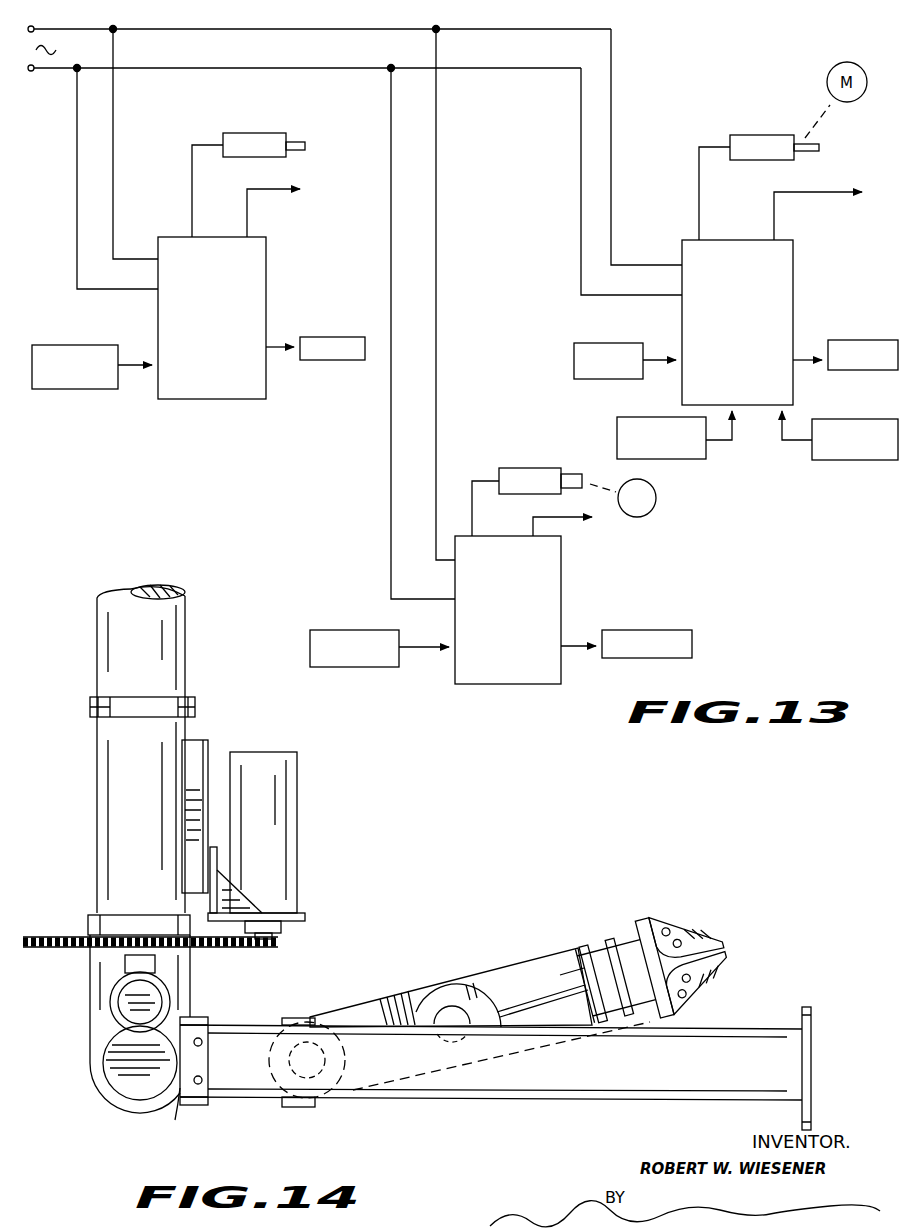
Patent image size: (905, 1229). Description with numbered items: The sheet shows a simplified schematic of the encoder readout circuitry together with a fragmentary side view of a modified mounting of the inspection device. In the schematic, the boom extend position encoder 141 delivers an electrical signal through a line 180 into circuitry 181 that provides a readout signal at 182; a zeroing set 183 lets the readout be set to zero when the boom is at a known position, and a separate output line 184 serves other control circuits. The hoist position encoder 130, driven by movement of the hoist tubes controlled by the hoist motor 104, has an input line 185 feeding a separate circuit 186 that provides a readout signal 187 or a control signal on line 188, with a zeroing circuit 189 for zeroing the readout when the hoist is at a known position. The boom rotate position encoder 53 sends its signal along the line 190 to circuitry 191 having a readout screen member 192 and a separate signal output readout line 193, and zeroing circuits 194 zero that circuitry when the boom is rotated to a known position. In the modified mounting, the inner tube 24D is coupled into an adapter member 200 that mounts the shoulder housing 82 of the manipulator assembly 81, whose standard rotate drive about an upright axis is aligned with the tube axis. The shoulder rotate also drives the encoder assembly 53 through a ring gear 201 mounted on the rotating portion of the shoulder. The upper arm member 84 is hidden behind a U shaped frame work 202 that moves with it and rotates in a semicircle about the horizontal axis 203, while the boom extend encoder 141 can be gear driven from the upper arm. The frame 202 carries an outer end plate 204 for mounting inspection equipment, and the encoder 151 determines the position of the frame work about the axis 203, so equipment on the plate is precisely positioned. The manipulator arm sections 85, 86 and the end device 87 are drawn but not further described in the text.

In FIG. 13, the boom extend position encoder 141 is at (244, 133).
In FIG. 13, the line 180 is at (192, 193).
In FIG. 13, the circuitry 181 is at (230, 316).
In FIG. 13, the readout signal 182 is at (338, 362).
In FIG. 13, the zeroing set 183 is at (88, 380).
In FIG. 13, the separate output line 184 is at (276, 195).
In FIG. 13, the boom rotate position encoder 53 is at (757, 135).
In FIG. 14, the boom rotate position encoder 53 is at (297, 857).
In FIG. 13, the line 190 is at (699, 197).
In FIG. 13, the circuitry 191 is at (755, 315).
In FIG. 13, the readout screen member 192 is at (850, 362).
In FIG. 13, the separate signal output readout line 193 is at (820, 196).
In FIG. 13, the zeroing circuits 194 is at (592, 355).
In FIG. 13, the hoist position encoder 130 is at (535, 475).
In FIG. 13, the input line 185 is at (481, 475).
In FIG. 13, the circuit 186 is at (523, 626).
In FIG. 13, the readout signal 187 is at (655, 640).
In FIG. 13, the control signal line 188 is at (567, 522).
In FIG. 13, the zeroing circuit 189 is at (345, 640).
In FIG. 13, the hoist motor 104 is at (656, 502).
In FIG. 14, the adapter member 200 is at (115, 760).
In FIG. 14, the inner tube 24D is at (175, 683).
In FIG. 14, the ring gear 201 is at (235, 950).
In FIG. 14, the shoulder housing 82 is at (190, 987).
In FIG. 14, the encoder 151 is at (116, 1012).
In FIG. 14, the horizontal axis 203 is at (145, 1072).
In FIG. 14, the upper arm member 84 is at (173, 1116).
In FIG. 14, the manipulator assembly 81 is at (281, 1120).
In FIG. 14, the arm base 85 is at (410, 992).
In FIG. 14, the arm cylinder 86 is at (535, 967).
In FIG. 14, the gripper head 87 is at (697, 942).
In FIG. 14, the U shaped frame work 202 is at (637, 1087).
In FIG. 14, the outer end plate 204 is at (812, 1048).